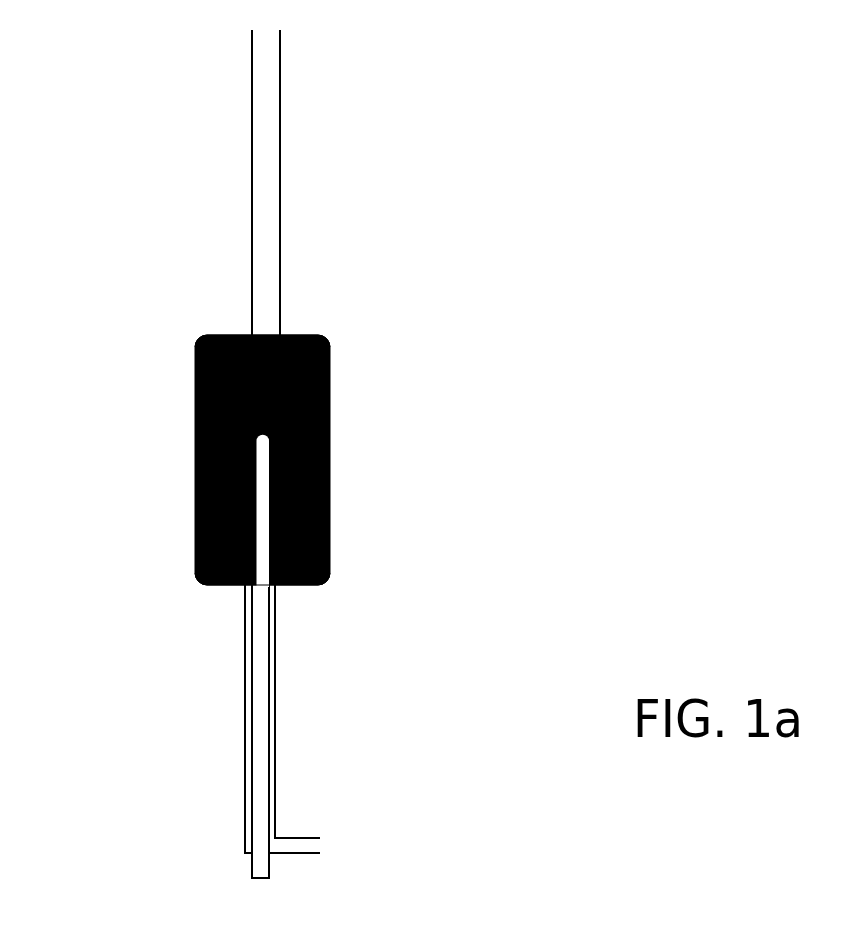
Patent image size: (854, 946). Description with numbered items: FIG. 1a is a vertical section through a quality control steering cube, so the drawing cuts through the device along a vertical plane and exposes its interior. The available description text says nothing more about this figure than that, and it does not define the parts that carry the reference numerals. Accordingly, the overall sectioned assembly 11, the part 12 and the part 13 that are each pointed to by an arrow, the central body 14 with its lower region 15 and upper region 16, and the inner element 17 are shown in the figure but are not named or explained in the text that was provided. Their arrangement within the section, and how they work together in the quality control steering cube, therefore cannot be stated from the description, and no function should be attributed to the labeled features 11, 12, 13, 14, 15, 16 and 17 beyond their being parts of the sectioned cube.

The catalytic burner / heating device 11 is at (172, 523).
The side inlet tube 12 is at (338, 847).
The outlet tube 13 is at (233, 31).
The catalyst body 14 is at (330, 453).
The lower end face of catalyst body 15 is at (327, 560).
The upper end face of catalyst body 16 is at (330, 350).
The inner tube 17 is at (263, 722).